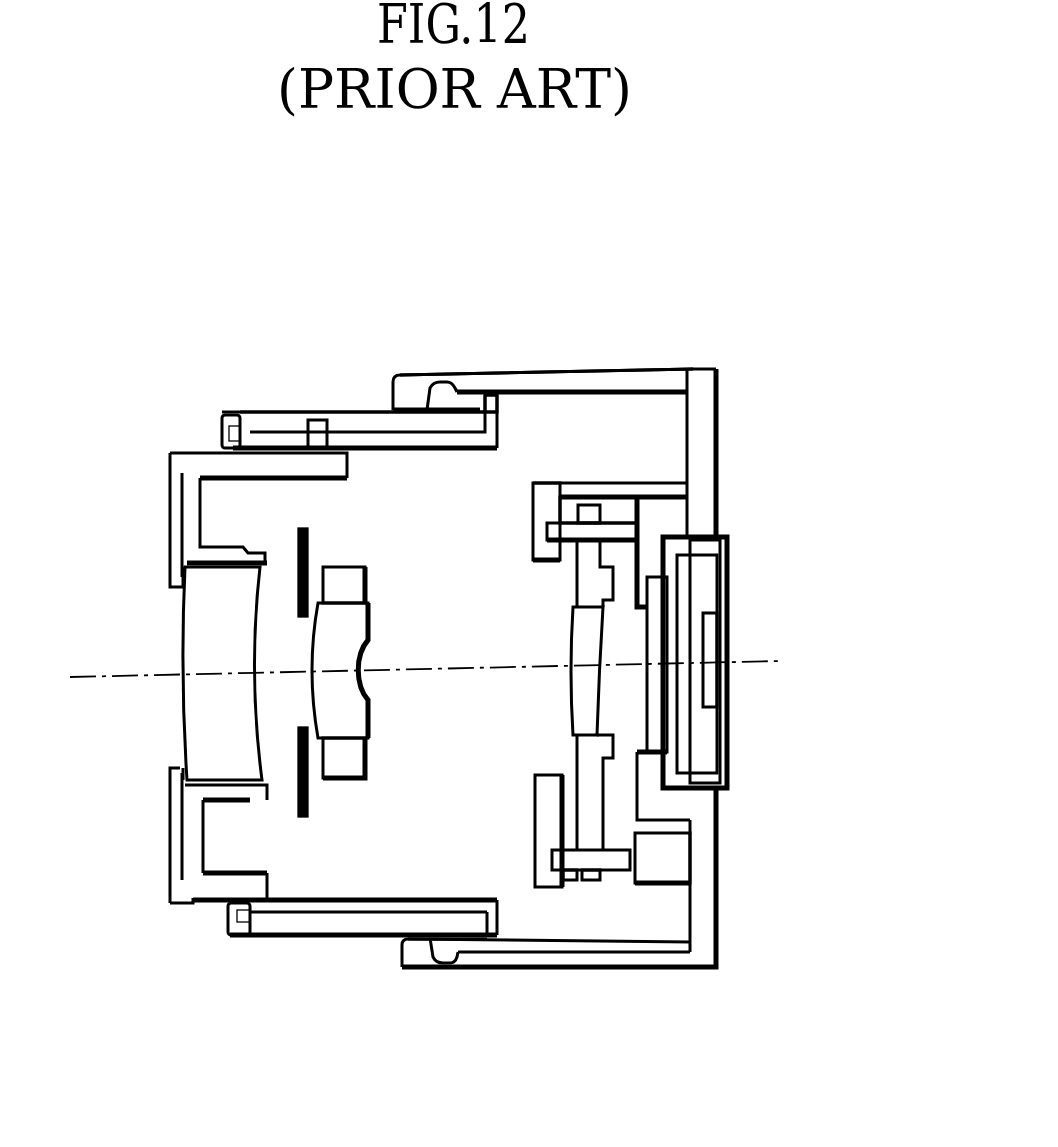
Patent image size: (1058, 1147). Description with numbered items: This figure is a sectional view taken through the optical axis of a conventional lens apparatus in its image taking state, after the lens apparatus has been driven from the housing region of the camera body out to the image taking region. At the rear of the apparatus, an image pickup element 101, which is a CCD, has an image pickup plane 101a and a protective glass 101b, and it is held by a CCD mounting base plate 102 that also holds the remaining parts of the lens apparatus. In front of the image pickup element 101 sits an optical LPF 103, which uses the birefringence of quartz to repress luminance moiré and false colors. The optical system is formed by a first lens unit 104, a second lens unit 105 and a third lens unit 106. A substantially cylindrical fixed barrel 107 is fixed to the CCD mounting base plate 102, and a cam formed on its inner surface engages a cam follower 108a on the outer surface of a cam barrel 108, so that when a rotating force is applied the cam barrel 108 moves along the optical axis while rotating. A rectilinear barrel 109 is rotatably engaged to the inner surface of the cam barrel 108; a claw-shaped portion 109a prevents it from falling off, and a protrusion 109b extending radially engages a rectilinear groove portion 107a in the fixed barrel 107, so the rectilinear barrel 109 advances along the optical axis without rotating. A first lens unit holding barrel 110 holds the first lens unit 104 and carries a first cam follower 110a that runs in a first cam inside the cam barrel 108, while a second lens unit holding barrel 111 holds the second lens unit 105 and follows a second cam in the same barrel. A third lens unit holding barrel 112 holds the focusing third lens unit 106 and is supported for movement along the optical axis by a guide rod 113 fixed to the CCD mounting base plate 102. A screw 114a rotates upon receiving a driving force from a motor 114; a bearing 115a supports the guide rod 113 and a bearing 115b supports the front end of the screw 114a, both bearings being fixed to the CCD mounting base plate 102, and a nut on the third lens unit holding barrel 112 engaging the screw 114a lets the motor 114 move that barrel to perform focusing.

The image pickup element 101 is at (728, 610).
The image pickup plane 101a is at (705, 683).
The protective glass 101b is at (677, 713).
The CCD mounting base plate 102 is at (712, 468).
The optical LPF 103 is at (653, 722).
The first lens unit 104 is at (207, 640).
The second lens unit 105 is at (327, 637).
The third lens unit 106 is at (585, 615).
The fixed barrel 107 is at (627, 382).
The rectilinear groove portion 107a is at (628, 950).
The cam barrel 108 is at (366, 425).
The cam follower 108a is at (433, 392).
The rectilinear barrel 109 is at (267, 412).
The claw-shaped portion 109a is at (220, 420).
The protrusion 109b is at (482, 400).
The first lens unit holding barrel 110 is at (213, 893).
The first cam follower 110a is at (307, 418).
The second lens unit holding barrel 111 is at (340, 767).
The third lens unit holding barrel 112 is at (594, 840).
The guide rod 113 is at (617, 525).
The motor 114 is at (673, 865).
The screw 114a is at (613, 857).
The bearing 115a is at (570, 487).
The bearing 115b is at (542, 870).